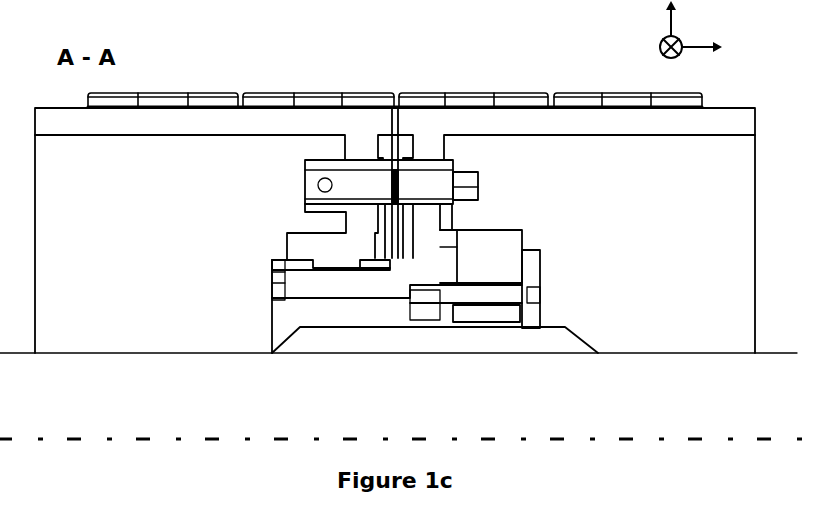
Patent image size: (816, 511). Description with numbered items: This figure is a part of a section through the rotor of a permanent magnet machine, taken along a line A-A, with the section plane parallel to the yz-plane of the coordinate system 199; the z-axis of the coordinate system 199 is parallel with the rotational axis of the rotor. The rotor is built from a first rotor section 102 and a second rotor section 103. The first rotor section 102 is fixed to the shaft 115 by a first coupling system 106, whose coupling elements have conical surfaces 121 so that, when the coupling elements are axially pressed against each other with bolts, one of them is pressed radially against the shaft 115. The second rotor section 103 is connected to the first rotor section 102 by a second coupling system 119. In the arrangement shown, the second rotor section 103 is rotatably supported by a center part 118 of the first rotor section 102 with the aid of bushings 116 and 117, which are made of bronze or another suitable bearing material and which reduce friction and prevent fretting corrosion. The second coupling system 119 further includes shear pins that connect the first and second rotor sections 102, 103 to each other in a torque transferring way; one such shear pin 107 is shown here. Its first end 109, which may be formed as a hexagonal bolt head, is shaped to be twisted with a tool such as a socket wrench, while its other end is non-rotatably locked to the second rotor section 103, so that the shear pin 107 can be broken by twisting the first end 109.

The first rotor section 102 is at (695, 262).
The second rotor section 103 is at (107, 178).
The first coupling system 106 is at (527, 313).
The shear pin 107 is at (305, 184).
The first end of the shear pin 109 is at (478, 189).
The shaft 115 is at (695, 412).
The bushing 116 is at (298, 268).
The bushing 117 is at (372, 267).
The center part 118 is at (327, 285).
The second coupling system 119 is at (389, 231).
The conical surfaces 121 is at (485, 322).
The coordinate system 199 is at (716, 31).